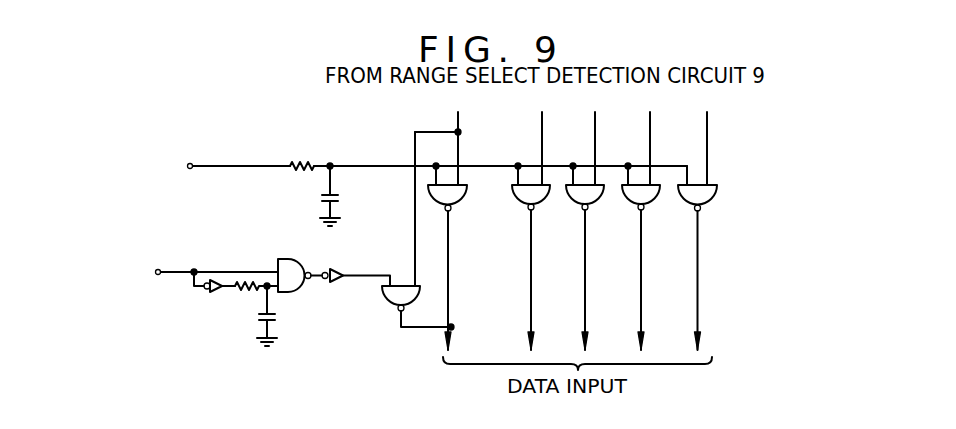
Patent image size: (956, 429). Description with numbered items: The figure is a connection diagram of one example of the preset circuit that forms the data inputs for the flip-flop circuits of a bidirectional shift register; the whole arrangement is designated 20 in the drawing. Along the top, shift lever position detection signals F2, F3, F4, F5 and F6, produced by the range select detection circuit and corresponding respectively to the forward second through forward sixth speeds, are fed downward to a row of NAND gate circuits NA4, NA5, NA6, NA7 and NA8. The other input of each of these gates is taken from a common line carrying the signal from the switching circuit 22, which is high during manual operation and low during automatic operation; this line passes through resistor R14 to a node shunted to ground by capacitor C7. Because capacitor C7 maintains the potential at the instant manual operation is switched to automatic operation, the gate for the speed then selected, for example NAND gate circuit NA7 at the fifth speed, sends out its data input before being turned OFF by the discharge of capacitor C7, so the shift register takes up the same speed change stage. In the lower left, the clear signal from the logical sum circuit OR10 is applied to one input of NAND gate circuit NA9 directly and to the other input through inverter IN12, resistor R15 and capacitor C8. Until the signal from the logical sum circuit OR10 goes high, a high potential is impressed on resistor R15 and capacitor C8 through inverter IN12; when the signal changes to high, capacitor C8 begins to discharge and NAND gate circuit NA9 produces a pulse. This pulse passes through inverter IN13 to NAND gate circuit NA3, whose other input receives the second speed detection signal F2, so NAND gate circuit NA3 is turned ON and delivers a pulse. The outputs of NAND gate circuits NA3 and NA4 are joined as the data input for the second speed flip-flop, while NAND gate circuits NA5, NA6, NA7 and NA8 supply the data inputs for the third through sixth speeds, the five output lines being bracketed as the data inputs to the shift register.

The switching circuit 22 is at (382, 156).
The resistor R14 is at (291, 140).
The capacitor C7 is at (338, 196).
The logical sum circuit OR10 is at (180, 255).
The inverter IN12 is at (214, 292).
The resistor R15 is at (245, 292).
The capacitor C8 is at (276, 315).
The NAND gate circuit NA9 is at (282, 259).
The inverter IN13 is at (340, 285).
The NAND gate circuit NA3 is at (400, 284).
The NAND gate circuit NA4 is at (467, 195).
The NAND gate circuit NA5 is at (550, 195).
The NAND gate circuit NA6 is at (604, 195).
The NAND gate circuit NA7 is at (660, 195).
The NAND gate circuit NA8 is at (717, 195).
The shift lever position detection signal for forward second speed F2 is at (463, 133).
The shift lever position detection signal for forward third speed F3 is at (539, 133).
The shift lever position detection signal for forward fourth speed F4 is at (591, 133).
The shift lever position detection signal for forward fifth speed F5 is at (641, 133).
The shift lever position detection signal for forward sixth speed F6 is at (698, 133).
The data input circuit 20 is at (755, 121).